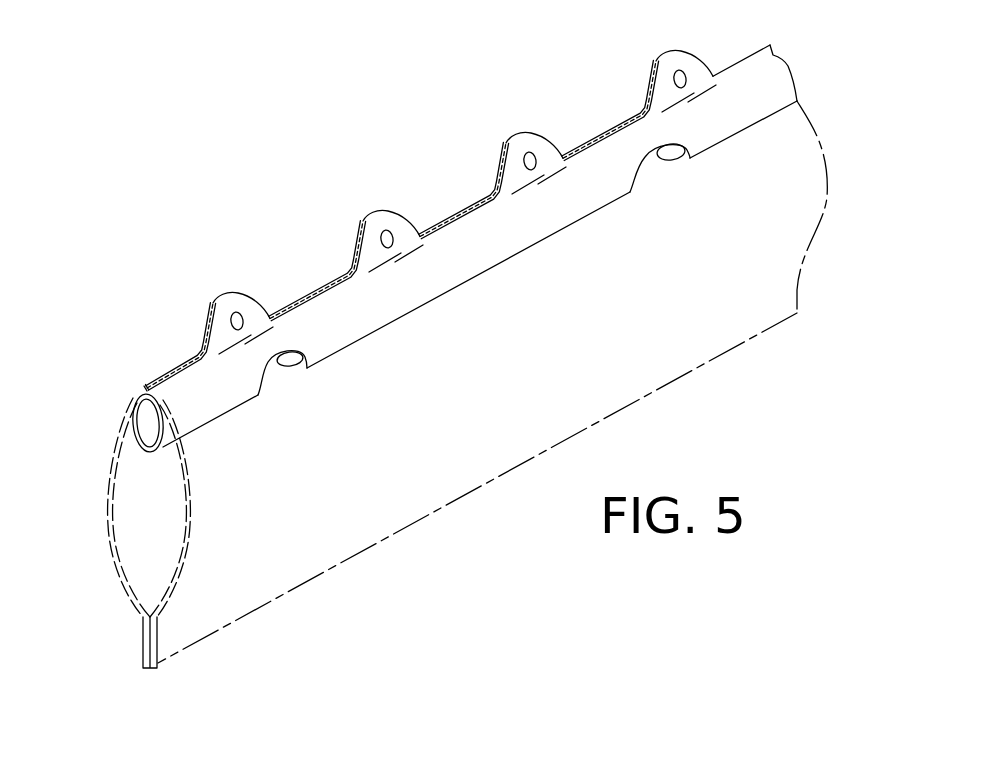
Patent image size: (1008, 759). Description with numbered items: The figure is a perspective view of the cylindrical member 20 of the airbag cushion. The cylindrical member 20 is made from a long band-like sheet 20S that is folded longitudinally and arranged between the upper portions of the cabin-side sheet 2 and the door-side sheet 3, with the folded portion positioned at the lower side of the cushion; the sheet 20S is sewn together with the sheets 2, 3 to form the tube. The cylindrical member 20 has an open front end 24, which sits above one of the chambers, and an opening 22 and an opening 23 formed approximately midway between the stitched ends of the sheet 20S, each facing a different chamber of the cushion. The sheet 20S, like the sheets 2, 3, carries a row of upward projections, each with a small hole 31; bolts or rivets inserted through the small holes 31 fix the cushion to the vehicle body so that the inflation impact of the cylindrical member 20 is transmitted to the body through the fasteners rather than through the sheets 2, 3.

The cabin-side sheet 2 is at (270, 583).
The door-side sheet 3 is at (107, 513).
The cylindrical member 20 is at (302, 260).
The band-like sheet 20S is at (193, 397).
The opening 22 is at (660, 170).
The opening 23 is at (278, 372).
The open front end 24 is at (148, 437).
The small holes 31 is at (237, 312).